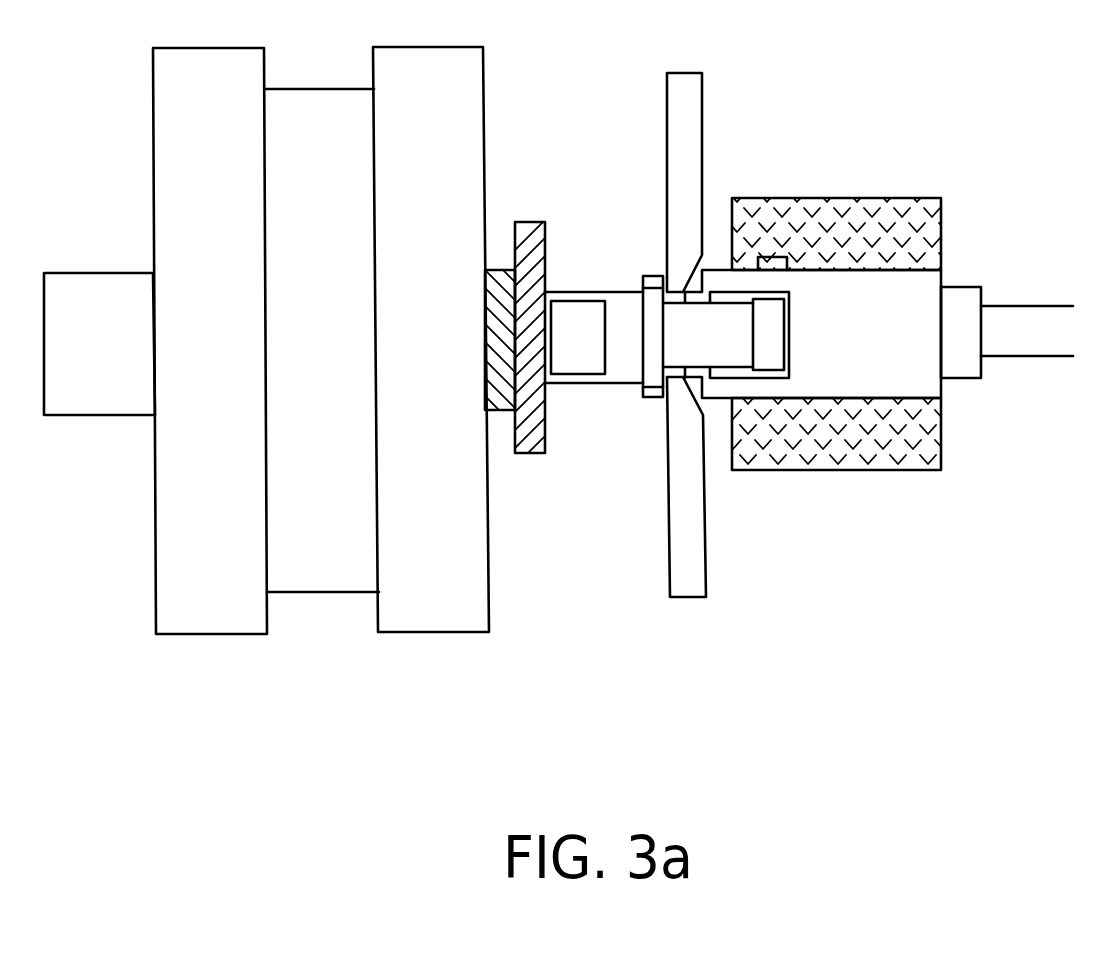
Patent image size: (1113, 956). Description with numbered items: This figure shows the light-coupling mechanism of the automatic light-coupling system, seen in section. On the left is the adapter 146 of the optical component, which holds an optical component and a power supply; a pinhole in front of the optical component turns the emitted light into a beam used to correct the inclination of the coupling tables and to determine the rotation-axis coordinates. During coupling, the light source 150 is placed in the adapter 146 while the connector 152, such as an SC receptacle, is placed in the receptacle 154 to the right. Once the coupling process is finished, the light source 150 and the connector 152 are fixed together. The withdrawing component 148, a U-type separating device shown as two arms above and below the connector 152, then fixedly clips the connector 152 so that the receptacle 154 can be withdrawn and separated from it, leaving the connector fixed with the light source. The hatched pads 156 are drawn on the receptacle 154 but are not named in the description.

The adapter 146 is at (428, 618).
The withdrawing component 148 is at (689, 587).
The light source 150 is at (582, 363).
The connector 152 is at (651, 283).
The receptacle 154 is at (913, 387).
The resilient pad / bushing 156 is at (858, 211).